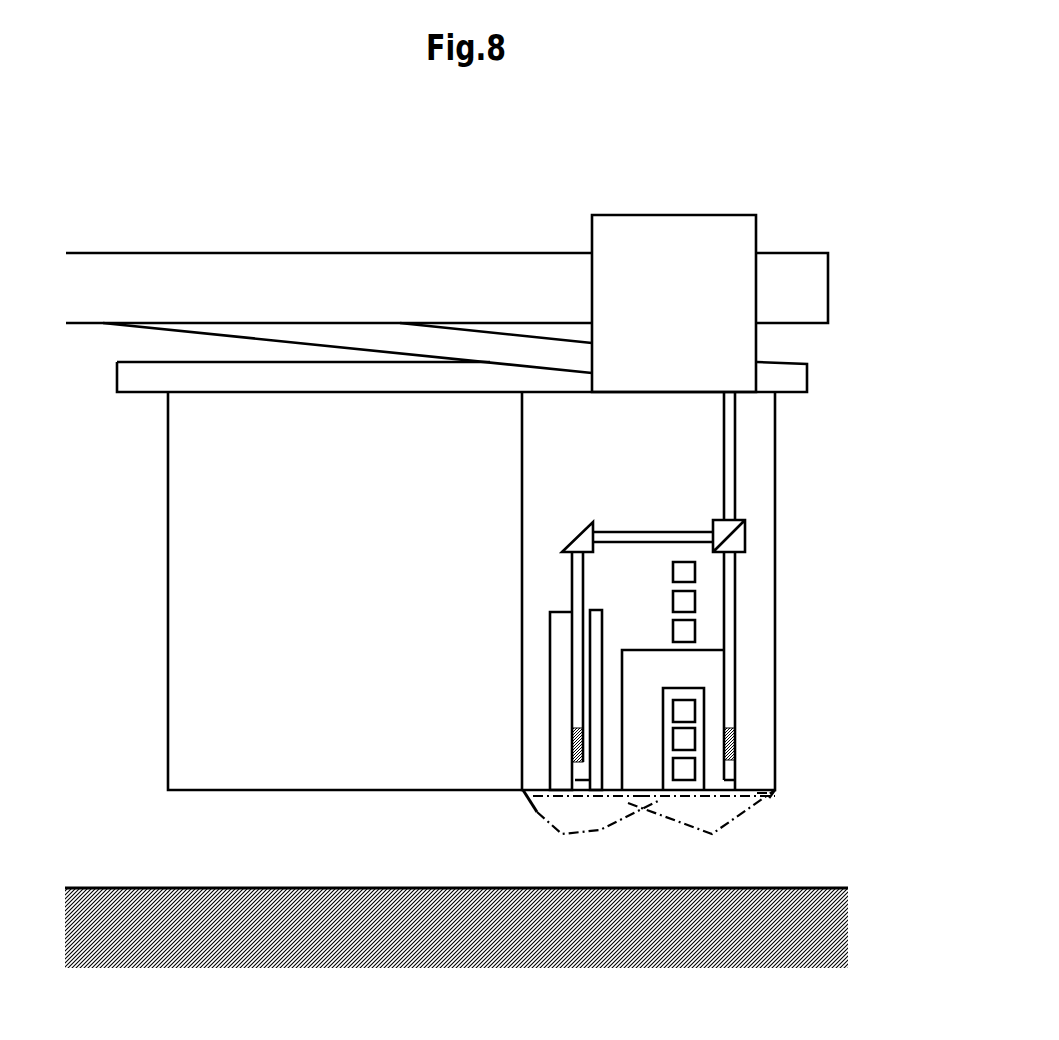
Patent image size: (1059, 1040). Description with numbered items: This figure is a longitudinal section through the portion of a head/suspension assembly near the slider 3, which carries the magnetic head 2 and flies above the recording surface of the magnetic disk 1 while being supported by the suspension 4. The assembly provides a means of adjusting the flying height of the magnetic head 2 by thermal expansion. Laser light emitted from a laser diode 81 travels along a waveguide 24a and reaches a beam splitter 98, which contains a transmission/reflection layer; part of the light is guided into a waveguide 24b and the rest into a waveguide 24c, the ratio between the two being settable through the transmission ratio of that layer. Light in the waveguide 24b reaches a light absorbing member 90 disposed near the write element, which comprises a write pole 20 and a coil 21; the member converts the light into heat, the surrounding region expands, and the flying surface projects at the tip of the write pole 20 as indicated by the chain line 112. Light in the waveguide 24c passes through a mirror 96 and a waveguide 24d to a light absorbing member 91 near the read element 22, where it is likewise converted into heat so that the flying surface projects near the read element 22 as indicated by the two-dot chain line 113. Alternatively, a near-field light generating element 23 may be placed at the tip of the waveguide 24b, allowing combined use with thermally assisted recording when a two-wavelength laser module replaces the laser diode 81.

The magnetic disk 1 is at (258, 905).
The magnetic head 2 is at (638, 423).
The slider 3 is at (185, 740).
The suspension 4 is at (193, 263).
The write pole 20 is at (710, 702).
The coil 21 is at (682, 628).
The read element 22 is at (555, 797).
The near-field light generating element 23 is at (738, 793).
The waveguide 24a is at (730, 483).
The waveguide 24b is at (730, 597).
The waveguide 24c is at (653, 535).
The waveguide 24d is at (568, 603).
The laser diode 81 is at (657, 232).
The light absorbing member 90 is at (735, 740).
The light absorbing member 91 is at (572, 743).
The mirror 96 is at (582, 539).
The beam splitter 98 is at (738, 542).
The chain line 112 is at (752, 825).
The two-dot chain line 113 is at (627, 813).